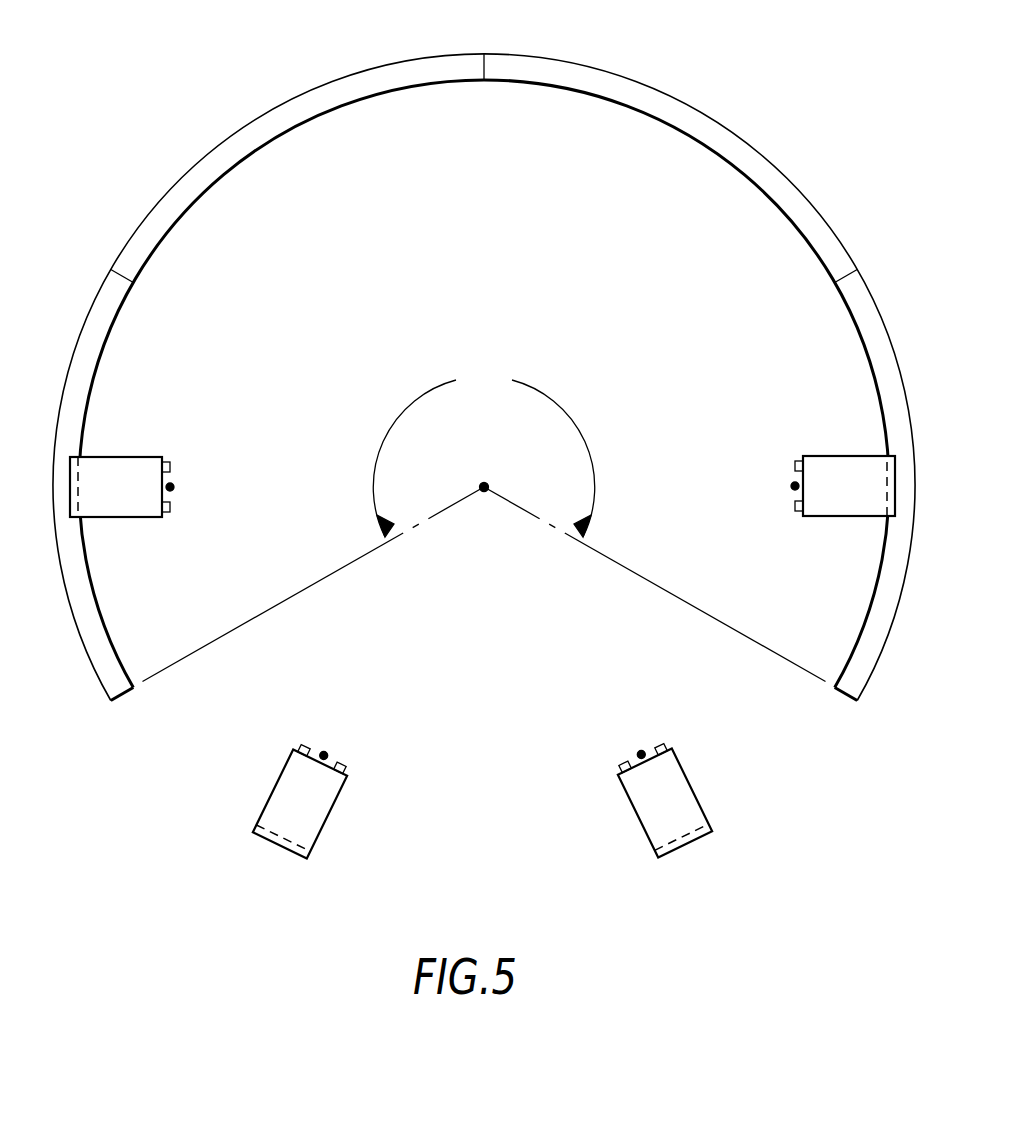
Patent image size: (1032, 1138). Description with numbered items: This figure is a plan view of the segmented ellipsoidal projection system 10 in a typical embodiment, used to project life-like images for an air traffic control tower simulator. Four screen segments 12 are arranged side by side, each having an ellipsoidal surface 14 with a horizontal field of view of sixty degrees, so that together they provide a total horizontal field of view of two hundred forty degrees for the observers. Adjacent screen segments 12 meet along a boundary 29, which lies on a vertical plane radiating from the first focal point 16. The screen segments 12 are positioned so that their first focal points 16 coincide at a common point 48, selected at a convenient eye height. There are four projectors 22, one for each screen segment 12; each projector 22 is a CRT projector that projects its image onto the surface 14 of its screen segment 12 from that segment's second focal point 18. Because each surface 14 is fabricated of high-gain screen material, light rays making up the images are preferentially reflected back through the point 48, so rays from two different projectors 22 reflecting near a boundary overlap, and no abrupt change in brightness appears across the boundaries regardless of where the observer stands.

The projection system 10 is at (478, 374).
The screen segment 12 is at (478, 400).
The surface 14 is at (484, 384).
The boundary 29 is at (484, 198).
The first focal point 16 is at (471, 527).
The point 48 is at (484, 523).
The second focal point 18 is at (482, 596).
The projector 22 is at (482, 676).